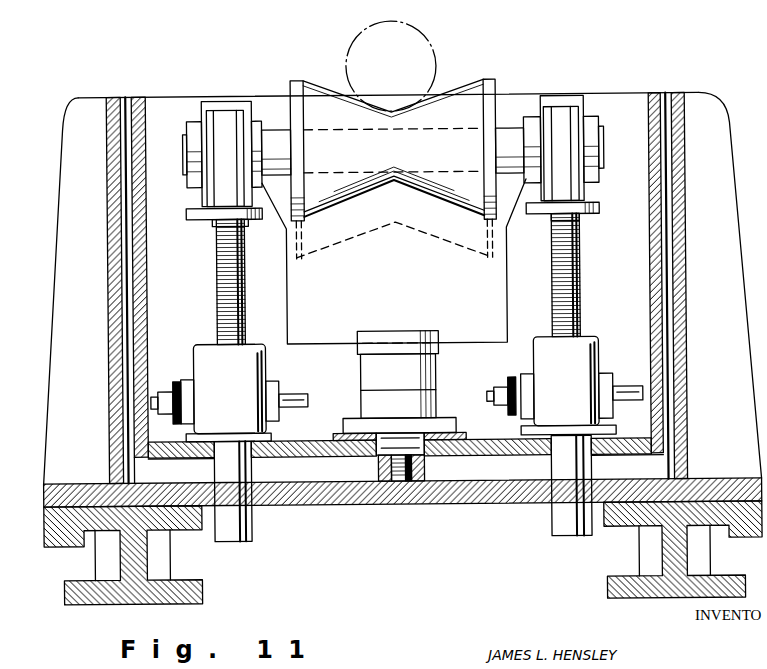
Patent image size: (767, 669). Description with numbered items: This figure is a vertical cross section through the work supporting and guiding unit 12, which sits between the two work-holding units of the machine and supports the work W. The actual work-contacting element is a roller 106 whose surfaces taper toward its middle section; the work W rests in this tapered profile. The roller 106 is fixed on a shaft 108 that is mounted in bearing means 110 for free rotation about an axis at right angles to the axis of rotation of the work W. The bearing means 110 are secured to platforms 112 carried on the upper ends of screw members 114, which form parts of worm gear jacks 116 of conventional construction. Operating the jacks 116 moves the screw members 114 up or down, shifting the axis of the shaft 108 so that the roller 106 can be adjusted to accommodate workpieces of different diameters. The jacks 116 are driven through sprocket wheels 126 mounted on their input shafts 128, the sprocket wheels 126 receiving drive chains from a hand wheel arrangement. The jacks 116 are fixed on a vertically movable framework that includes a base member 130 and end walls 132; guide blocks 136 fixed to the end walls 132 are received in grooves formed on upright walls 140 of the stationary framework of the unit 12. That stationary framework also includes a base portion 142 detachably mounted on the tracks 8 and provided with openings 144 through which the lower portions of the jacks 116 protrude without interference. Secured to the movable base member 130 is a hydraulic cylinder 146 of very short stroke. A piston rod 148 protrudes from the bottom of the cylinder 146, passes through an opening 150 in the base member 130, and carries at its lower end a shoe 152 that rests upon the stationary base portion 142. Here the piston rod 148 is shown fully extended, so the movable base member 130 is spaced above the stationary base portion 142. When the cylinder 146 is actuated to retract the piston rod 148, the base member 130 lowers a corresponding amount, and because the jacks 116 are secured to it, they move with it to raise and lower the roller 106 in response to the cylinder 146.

The work supporting and guiding unit 12 is at (607, 86).
The work W is at (432, 58).
The tracks 8 is at (197, 592).
The roller 106 is at (463, 97).
The shaft 108 is at (290, 110).
The bearing means 110 is at (228, 125).
The platforms 112 is at (205, 218).
The screw members 114 is at (221, 262).
The worm gear jacks 116 is at (245, 383).
The sprocket wheels 126 is at (175, 386).
The input shafts 128 is at (160, 400).
The base member 130 is at (318, 440).
The end walls 132 is at (143, 114).
The guide blocks 136 is at (120, 98).
The upright walls 140 is at (107, 118).
The base portion 142 is at (44, 503).
The openings 144 is at (214, 480).
The hydraulic cylinder 146 is at (408, 387).
The piston rod 148 is at (384, 462).
The opening 150 is at (445, 440).
The shoe 152 is at (420, 462).